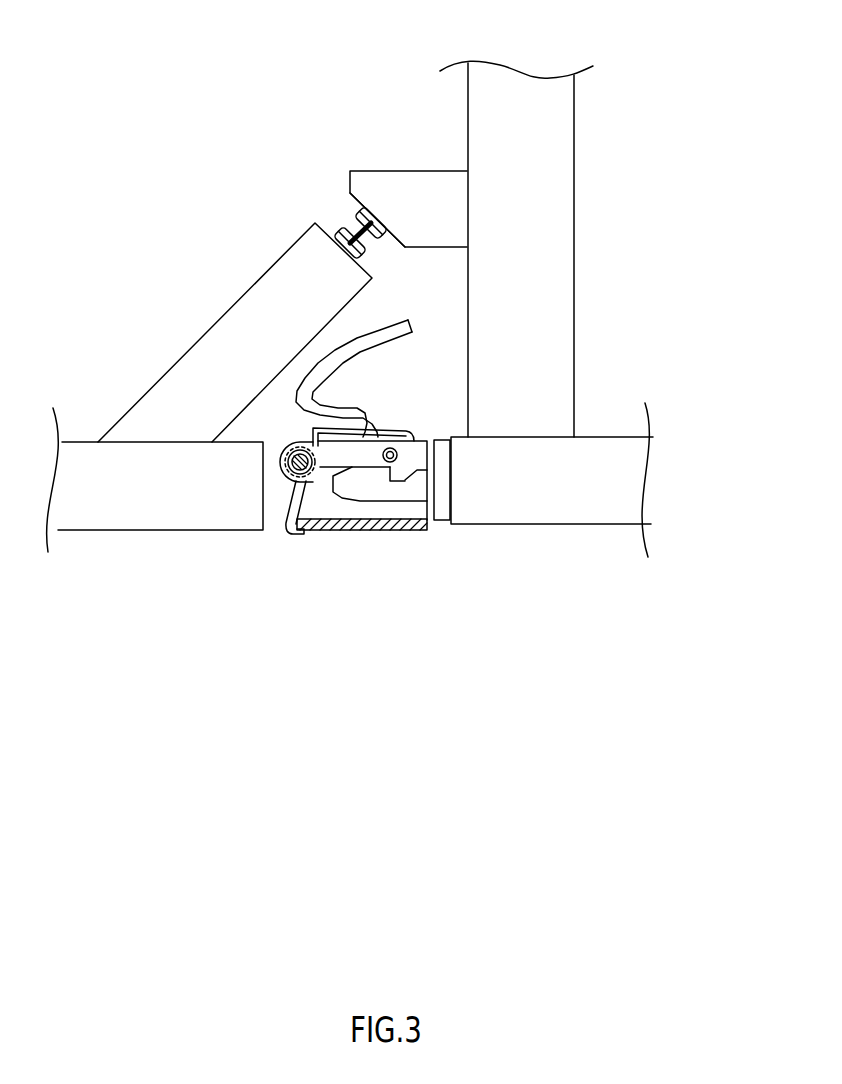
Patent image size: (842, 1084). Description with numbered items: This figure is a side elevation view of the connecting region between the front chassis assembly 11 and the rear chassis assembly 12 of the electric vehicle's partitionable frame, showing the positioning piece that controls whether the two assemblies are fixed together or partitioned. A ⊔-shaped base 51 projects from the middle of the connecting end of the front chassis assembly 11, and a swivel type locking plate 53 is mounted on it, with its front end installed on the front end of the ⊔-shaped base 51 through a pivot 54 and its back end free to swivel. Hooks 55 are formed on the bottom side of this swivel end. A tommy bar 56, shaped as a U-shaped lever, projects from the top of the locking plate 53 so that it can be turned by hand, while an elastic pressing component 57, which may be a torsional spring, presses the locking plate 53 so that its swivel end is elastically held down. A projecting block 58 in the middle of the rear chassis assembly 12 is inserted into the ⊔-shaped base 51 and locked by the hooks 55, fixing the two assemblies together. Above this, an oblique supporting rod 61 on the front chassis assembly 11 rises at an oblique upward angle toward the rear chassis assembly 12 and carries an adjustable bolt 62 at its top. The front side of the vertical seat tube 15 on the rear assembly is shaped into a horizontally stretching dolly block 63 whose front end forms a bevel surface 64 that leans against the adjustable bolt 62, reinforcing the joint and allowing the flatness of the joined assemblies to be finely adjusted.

The front chassis assembly 11 is at (142, 515).
The rear chassis assembly 12 is at (603, 512).
The vertical seat tube 15 is at (555, 167).
The ⊔-shaped base 51 is at (424, 533).
The locking plate 53 is at (342, 453).
The pivot pin 54 is at (398, 449).
The hooks 55 is at (397, 481).
The tommy bar 56 is at (378, 341).
The elastic pressing component 57 is at (395, 435).
The projecting block 58 is at (381, 475).
The oblique supporting rod 61 is at (228, 330).
The adjustable bolt 62 is at (356, 217).
The dolly block 63 is at (422, 180).
The bevel surface 64 is at (350, 197).